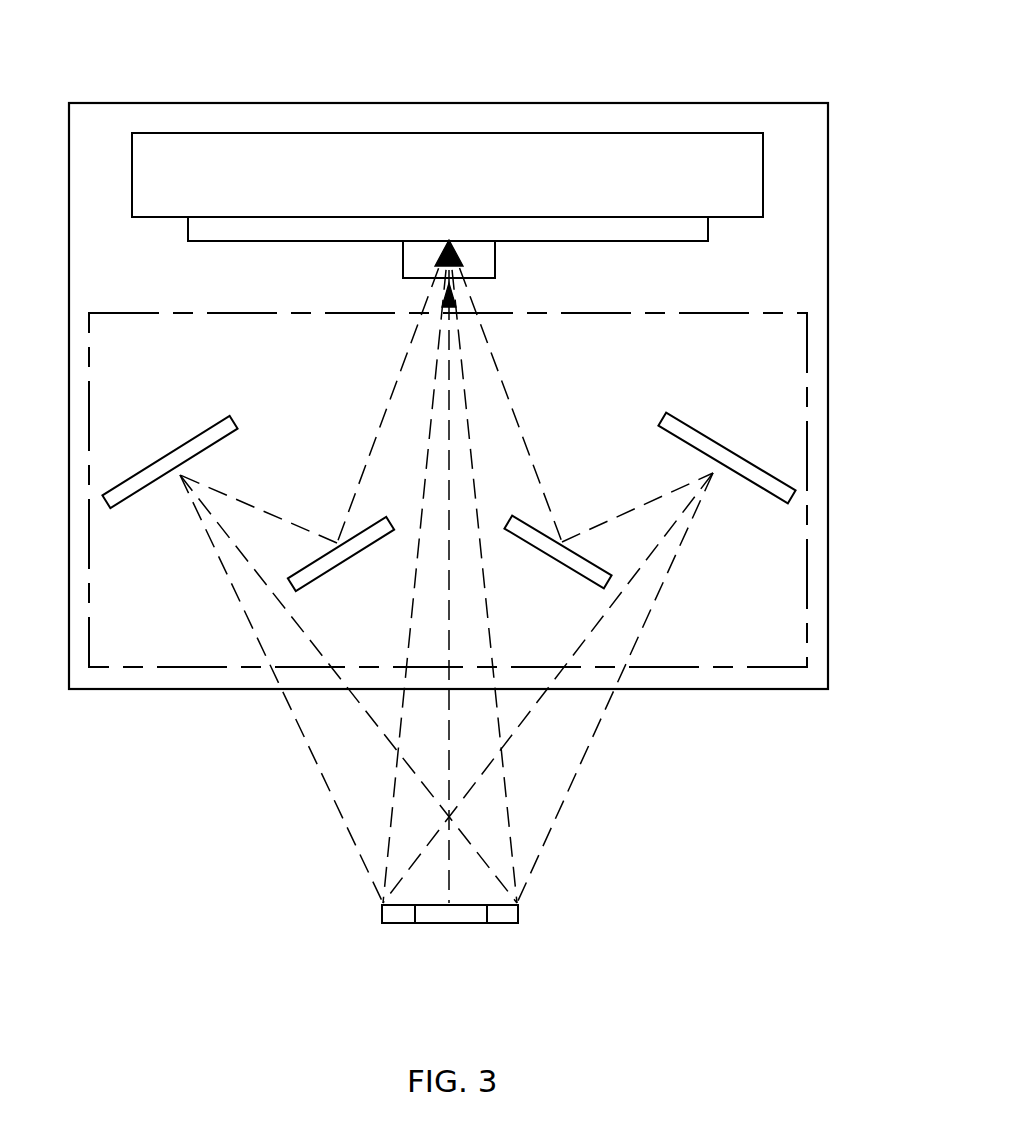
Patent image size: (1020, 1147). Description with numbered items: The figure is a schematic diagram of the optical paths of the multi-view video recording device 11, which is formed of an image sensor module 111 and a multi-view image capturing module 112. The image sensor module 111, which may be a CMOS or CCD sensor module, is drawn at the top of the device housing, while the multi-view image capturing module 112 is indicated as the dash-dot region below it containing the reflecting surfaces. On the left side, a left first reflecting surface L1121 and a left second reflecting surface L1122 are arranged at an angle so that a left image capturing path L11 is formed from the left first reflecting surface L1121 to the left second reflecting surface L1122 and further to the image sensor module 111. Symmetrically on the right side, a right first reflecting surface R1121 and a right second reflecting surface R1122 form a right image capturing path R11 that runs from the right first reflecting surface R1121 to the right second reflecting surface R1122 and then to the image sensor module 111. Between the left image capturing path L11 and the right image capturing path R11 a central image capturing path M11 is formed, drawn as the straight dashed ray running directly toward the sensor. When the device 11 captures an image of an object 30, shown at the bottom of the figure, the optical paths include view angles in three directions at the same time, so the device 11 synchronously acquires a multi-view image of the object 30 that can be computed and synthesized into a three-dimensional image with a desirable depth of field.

The multi-view video recording device 11 is at (540, 100).
The image sensor module 111 is at (230, 155).
The multi-view image capturing module 112 is at (807, 667).
The left image capturing path L11 is at (255, 505).
The right image capturing path R11 is at (645, 502).
The central image capturing path M11 is at (450, 873).
The left first reflecting surface L1121 is at (167, 462).
The left second reflecting surface L1122 is at (337, 563).
The right first reflecting surface R1121 is at (710, 457).
The right second reflecting surface R1122 is at (555, 545).
The object 30 is at (432, 915).